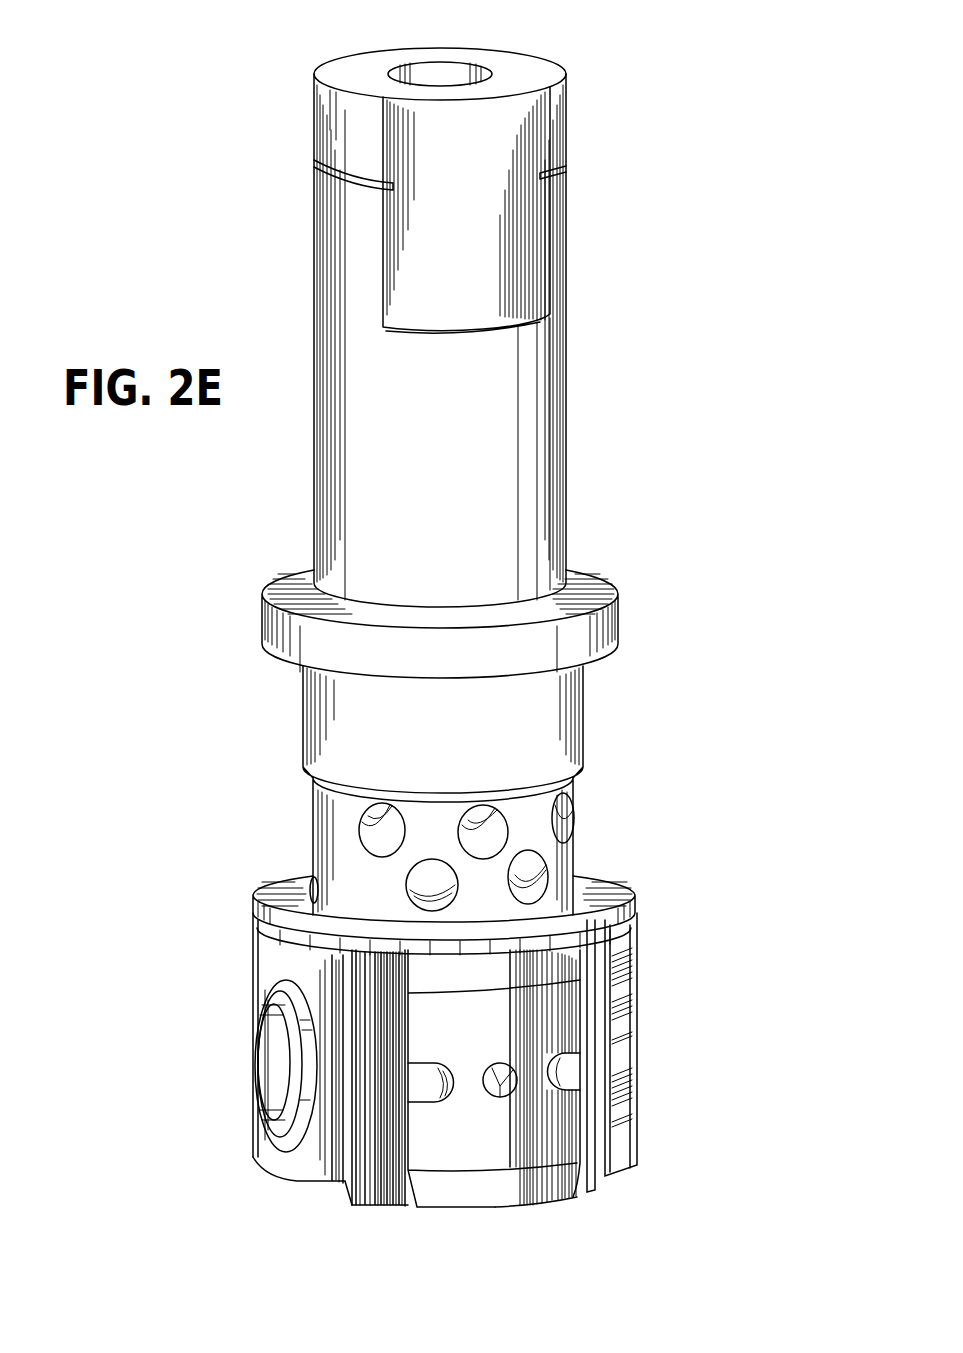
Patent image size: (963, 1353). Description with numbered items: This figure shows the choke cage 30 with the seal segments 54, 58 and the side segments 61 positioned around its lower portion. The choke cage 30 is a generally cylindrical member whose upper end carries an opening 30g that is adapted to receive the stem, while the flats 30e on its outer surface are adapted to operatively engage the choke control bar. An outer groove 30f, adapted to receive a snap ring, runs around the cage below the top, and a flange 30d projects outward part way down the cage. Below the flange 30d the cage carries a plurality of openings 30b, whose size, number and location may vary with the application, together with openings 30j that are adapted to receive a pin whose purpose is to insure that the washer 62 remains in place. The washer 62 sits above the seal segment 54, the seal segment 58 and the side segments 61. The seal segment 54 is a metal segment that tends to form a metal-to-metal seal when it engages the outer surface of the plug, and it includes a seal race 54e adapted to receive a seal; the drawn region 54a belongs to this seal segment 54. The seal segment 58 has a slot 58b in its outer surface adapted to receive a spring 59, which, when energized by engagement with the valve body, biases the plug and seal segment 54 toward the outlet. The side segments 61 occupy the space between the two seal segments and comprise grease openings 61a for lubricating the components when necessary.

The choke cage 30 is at (312, 288).
The opening 30g is at (453, 68).
The groove 30f is at (558, 169).
The flats 30e is at (537, 238).
The flange 30d is at (262, 607).
The openings 30b is at (435, 867).
The openings 30j is at (313, 892).
The washer 62 is at (615, 890).
The spring 59 is at (628, 1002).
The seal segment 58 is at (650, 1146).
The slot 58b is at (608, 1172).
The window 54a is at (265, 1028).
The seal race 54e is at (257, 1133).
The seal segment 54 is at (297, 1179).
The side segments 61 is at (450, 1192).
The grease openings 61a is at (425, 1063).